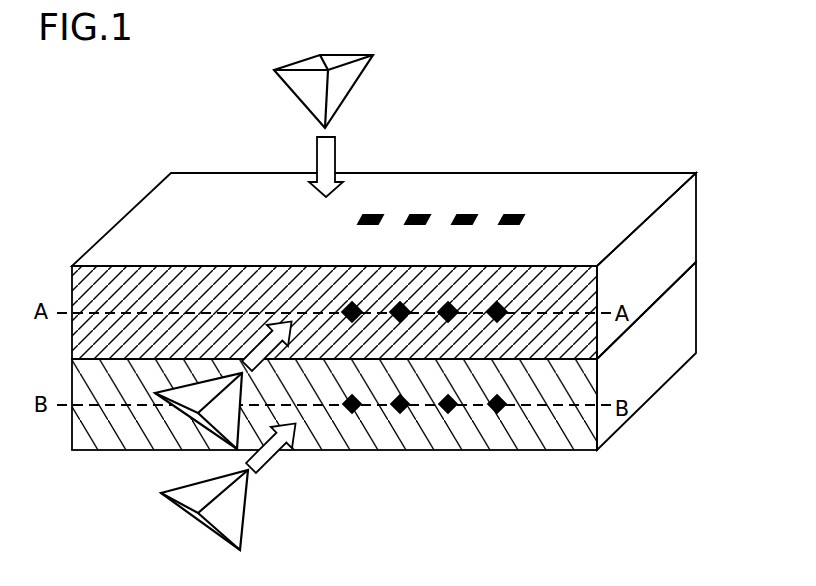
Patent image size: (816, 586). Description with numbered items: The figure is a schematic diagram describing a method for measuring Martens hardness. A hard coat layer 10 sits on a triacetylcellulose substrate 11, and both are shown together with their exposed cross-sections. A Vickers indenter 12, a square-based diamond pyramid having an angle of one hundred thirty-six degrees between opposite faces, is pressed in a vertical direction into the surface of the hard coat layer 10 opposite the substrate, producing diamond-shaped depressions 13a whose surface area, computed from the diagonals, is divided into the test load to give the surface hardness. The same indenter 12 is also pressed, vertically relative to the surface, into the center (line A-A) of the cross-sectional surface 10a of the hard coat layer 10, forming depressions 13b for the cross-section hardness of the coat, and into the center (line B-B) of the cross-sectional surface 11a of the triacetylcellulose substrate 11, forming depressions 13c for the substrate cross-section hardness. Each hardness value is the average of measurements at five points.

The hard coat layer 10 is at (668, 232).
The cross-sectional surface of the hard coat layer 10a is at (580, 286).
The triacetylcellulose substrate 11 is at (647, 365).
The cross-sectional surface of the triacetylcellulose substrate 11a is at (582, 430).
The Vickers indenter 12 is at (337, 82).
The diamond-shaped depression 13a is at (381, 216).
The depressions 13b is at (360, 304).
The depressions 13c is at (355, 413).